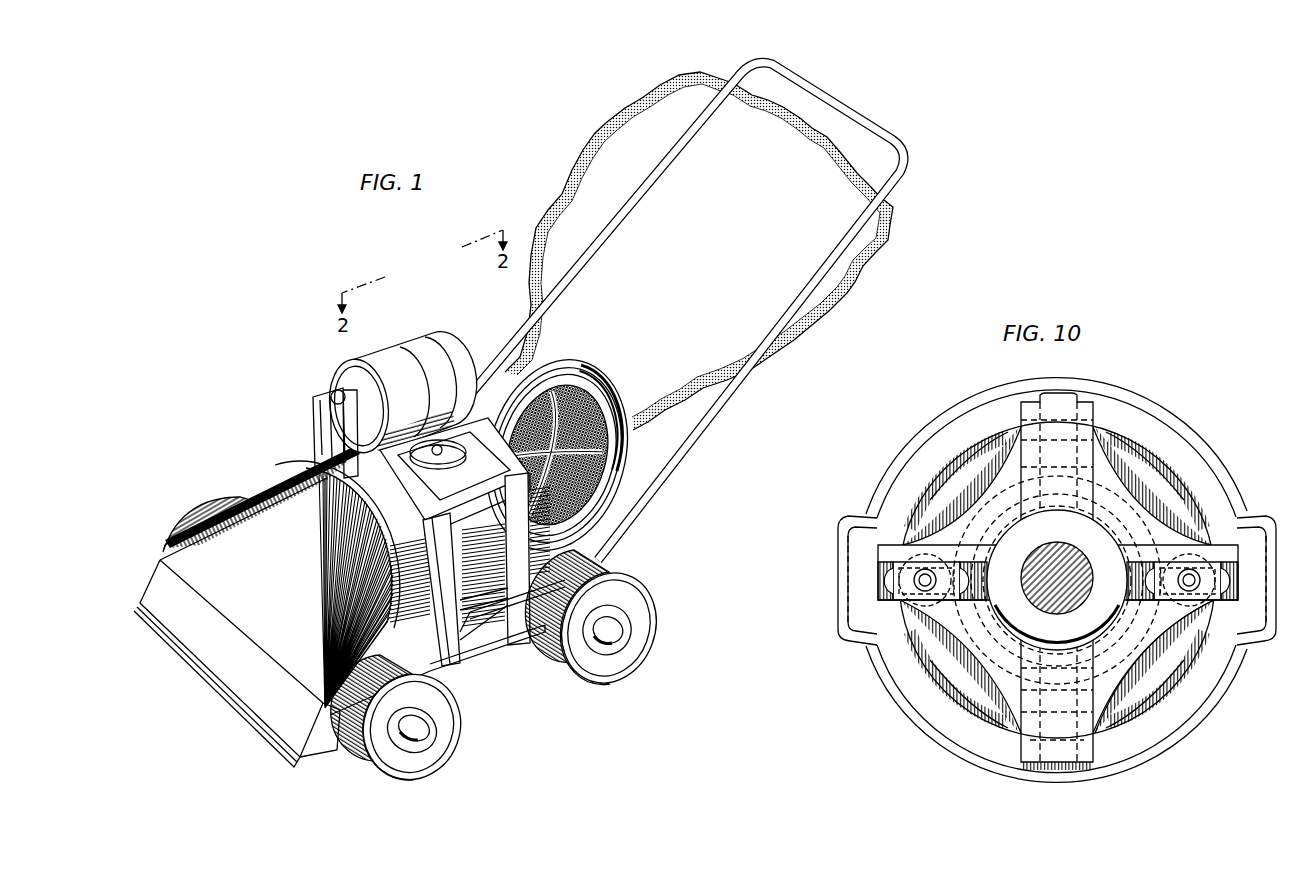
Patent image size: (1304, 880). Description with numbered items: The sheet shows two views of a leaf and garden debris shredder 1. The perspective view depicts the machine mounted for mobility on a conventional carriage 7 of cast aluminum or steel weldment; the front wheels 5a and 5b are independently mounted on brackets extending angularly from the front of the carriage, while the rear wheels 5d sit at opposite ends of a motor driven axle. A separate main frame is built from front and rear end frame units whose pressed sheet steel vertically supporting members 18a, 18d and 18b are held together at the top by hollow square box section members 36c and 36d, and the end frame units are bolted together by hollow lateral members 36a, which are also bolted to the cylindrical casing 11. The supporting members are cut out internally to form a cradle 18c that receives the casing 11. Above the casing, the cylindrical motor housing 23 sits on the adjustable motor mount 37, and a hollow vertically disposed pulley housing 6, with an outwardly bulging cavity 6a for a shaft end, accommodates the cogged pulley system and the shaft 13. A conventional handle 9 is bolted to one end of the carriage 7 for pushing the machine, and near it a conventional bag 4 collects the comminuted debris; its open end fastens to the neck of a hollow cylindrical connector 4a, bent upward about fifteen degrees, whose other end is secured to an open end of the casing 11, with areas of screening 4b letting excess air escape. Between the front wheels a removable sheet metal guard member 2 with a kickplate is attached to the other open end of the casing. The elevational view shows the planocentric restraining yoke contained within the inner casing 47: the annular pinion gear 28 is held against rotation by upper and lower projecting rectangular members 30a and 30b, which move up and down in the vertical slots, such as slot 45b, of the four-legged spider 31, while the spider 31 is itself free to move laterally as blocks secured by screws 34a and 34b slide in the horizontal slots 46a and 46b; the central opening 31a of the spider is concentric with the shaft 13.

In FIG. 1, the leaf and garden debris shredder 1 is at (236, 436).
In FIG. 1, the guard member 2 is at (155, 583).
In FIG. 1, the bag 4 is at (607, 150).
In FIG. 1, the hollow cylindrical connector 4a is at (580, 503).
In FIG. 1, the screening 4b is at (588, 462).
In FIG. 1, the front wheel 5a is at (192, 523).
In FIG. 1, the front wheel 5b is at (383, 760).
In FIG. 1, the rear wheels 5d is at (645, 604).
In FIG. 1, the pulley housing 6 is at (340, 430).
In FIG. 1, the bulging cavity 6a is at (337, 398).
In FIG. 1, the carriage 7 is at (485, 635).
In FIG. 1, the handle 9 is at (904, 160).
In FIG. 1, the cylindrical casing 11 is at (380, 490).
In FIG. 10, the shaft 13 is at (1040, 578).
In FIG. 1, the vertically supporting member 18a is at (447, 640).
In FIG. 1, the vertically supporting member 18b is at (518, 630).
In FIG. 1, the cradle 18c is at (487, 622).
In FIG. 1, the vertically supporting member 18d is at (310, 447).
In FIG. 1, the cylindrical motor housing 23 is at (388, 357).
In FIG. 10, the annular pinion gear 28 is at (982, 453).
In FIG. 10, the projecting rectangular member 30a is at (1067, 413).
In FIG. 10, the projecting rectangular member 30b is at (1030, 698).
In FIG. 10, the spider 31 is at (1097, 695).
In FIG. 10, the central opening 31a is at (1015, 529).
In FIG. 10, the screw 34a is at (925, 585).
In FIG. 10, the screw 34b is at (1192, 578).
In FIG. 1, the lateral member 36a is at (505, 515).
In FIG. 1, the top supporting member 36c is at (405, 410).
In FIG. 1, the top supporting member 36d is at (450, 395).
In FIG. 1, the adjustable motor mount 37 is at (458, 440).
In FIG. 10, the vertical slot 45b is at (1057, 740).
In FIG. 10, the horizontal slot 46a is at (880, 580).
In FIG. 10, the horizontal slot 46b is at (1143, 595).
In FIG. 10, the inner casing 47 is at (898, 467).